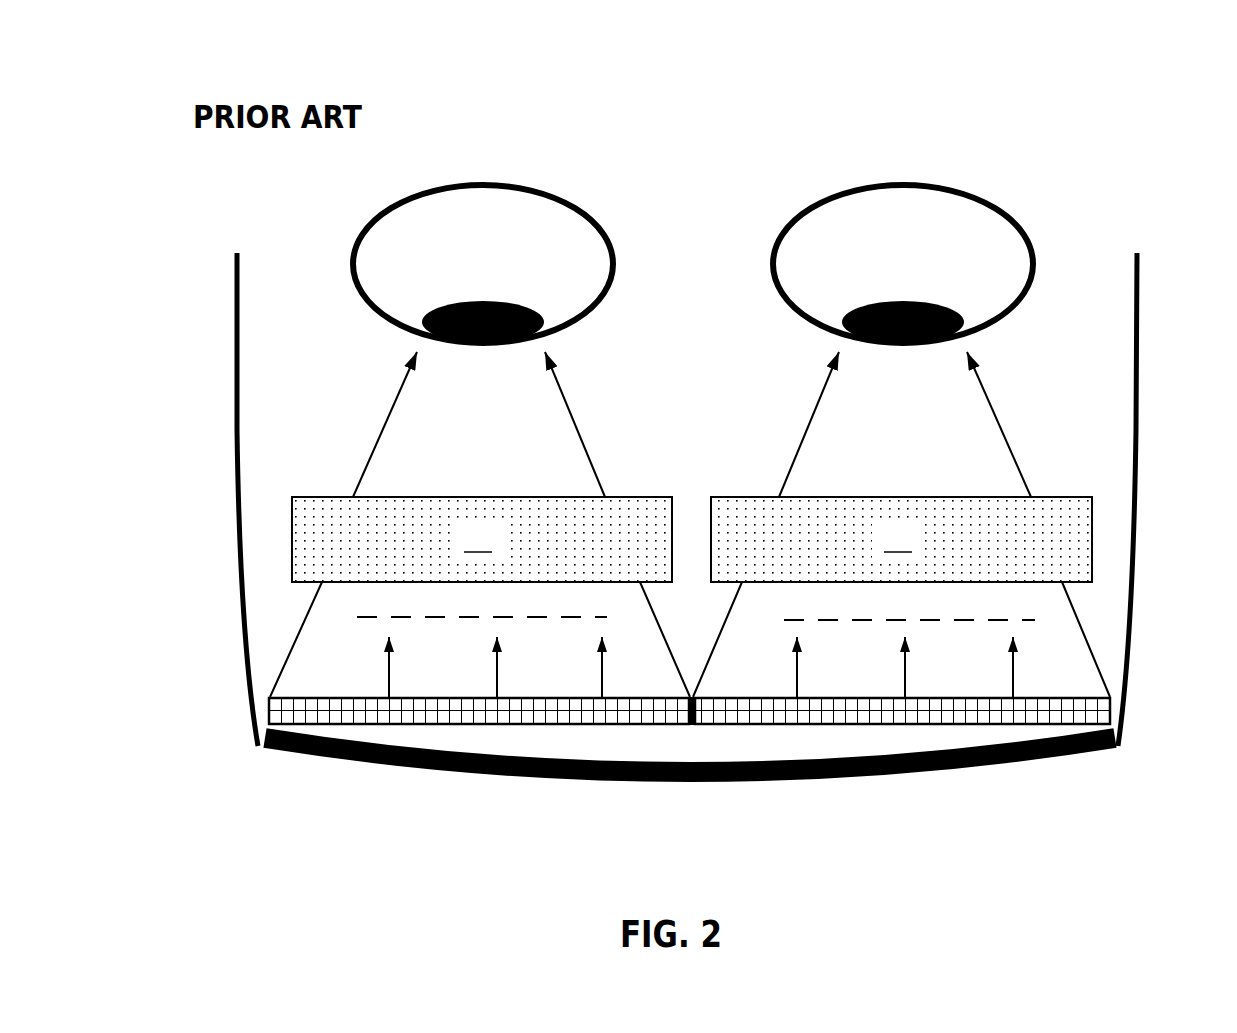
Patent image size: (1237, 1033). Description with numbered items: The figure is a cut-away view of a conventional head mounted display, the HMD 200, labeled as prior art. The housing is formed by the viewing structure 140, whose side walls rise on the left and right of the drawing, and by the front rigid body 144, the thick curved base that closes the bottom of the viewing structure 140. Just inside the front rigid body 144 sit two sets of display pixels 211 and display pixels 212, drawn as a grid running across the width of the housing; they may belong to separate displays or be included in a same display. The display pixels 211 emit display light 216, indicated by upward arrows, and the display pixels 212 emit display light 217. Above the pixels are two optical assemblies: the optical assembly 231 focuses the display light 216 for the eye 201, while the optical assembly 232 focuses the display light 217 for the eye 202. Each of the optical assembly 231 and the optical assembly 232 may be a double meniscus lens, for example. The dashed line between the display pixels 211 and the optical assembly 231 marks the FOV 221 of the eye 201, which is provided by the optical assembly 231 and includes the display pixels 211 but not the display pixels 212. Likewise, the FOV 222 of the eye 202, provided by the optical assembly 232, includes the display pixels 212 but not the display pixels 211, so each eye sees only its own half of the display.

The HMD 200 is at (1235, 52).
The viewing structure 140 is at (237, 500).
The front rigid body 144 is at (920, 771).
The eye 201 is at (547, 177).
The eye 202 is at (967, 177).
The display pixels 211 is at (560, 726).
The display pixels 212 is at (830, 727).
The display light 216 is at (488, 667).
The display light 217 is at (898, 667).
The FOV 221 is at (483, 618).
The FOV 222 is at (909, 621).
The optical assembly 231 is at (480, 524).
The optical assembly 232 is at (901, 524).